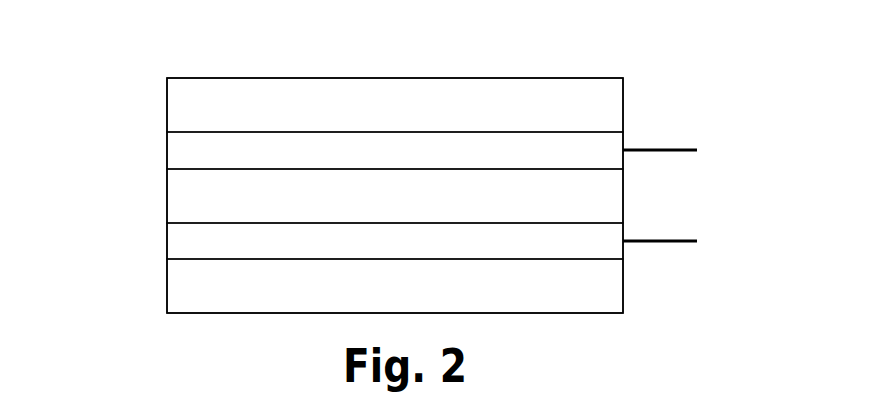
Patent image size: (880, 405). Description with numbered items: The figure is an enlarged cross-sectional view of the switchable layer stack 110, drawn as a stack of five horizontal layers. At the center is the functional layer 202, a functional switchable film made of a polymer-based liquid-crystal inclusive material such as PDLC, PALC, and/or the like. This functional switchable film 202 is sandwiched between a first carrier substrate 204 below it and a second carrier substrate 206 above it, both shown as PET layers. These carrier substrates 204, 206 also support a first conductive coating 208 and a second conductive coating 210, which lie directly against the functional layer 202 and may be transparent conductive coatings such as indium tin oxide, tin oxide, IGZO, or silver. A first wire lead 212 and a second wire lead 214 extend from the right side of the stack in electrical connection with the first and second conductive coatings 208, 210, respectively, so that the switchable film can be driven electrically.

The switchable layer stack 110 is at (611, 57).
The functional layer 202 is at (167, 197).
The first carrier substrate 204 is at (167, 286).
The second carrier substrate 206 is at (167, 104).
The first conductive coating 208 is at (167, 241).
The second conductive coating 210 is at (167, 150).
The first wire lead 212 is at (660, 240).
The second wire lead 214 is at (660, 149).